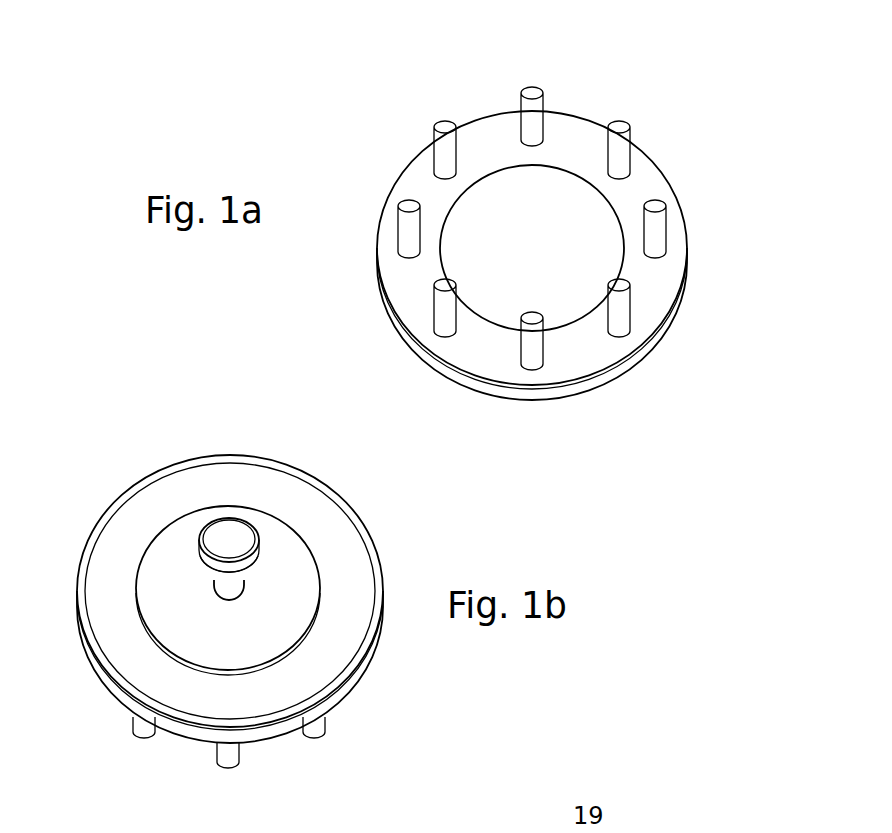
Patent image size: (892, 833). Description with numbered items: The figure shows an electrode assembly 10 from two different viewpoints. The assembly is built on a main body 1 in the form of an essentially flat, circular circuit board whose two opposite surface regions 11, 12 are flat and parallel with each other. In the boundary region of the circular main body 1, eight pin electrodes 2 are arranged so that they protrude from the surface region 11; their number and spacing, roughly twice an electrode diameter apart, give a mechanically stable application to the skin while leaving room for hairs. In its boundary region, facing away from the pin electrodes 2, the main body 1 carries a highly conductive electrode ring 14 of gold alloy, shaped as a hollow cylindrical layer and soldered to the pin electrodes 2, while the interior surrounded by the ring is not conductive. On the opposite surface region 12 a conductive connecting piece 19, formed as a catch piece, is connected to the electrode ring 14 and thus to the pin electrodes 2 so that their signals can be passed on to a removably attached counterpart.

In FIG. 1A, the main body 1 is at (475, 227).
In FIG. 1A, the pin electrodes 2 is at (535, 120).
In FIG. 1B, the pin electrodes 2 is at (318, 738).
In FIG. 1A, the electrode assembly 10 is at (704, 80).
In FIG. 1B, the electrode assembly 10 is at (81, 424).
In FIG. 1A, the surface region 11 is at (656, 281).
In FIG. 1A, the surface region 12 is at (649, 373).
In FIG. 1A, the electrode ring 14 is at (572, 140).
In FIG. 1B, the electrode ring 14 is at (127, 700).
In FIG. 1B, the connecting piece 19 is at (222, 548).